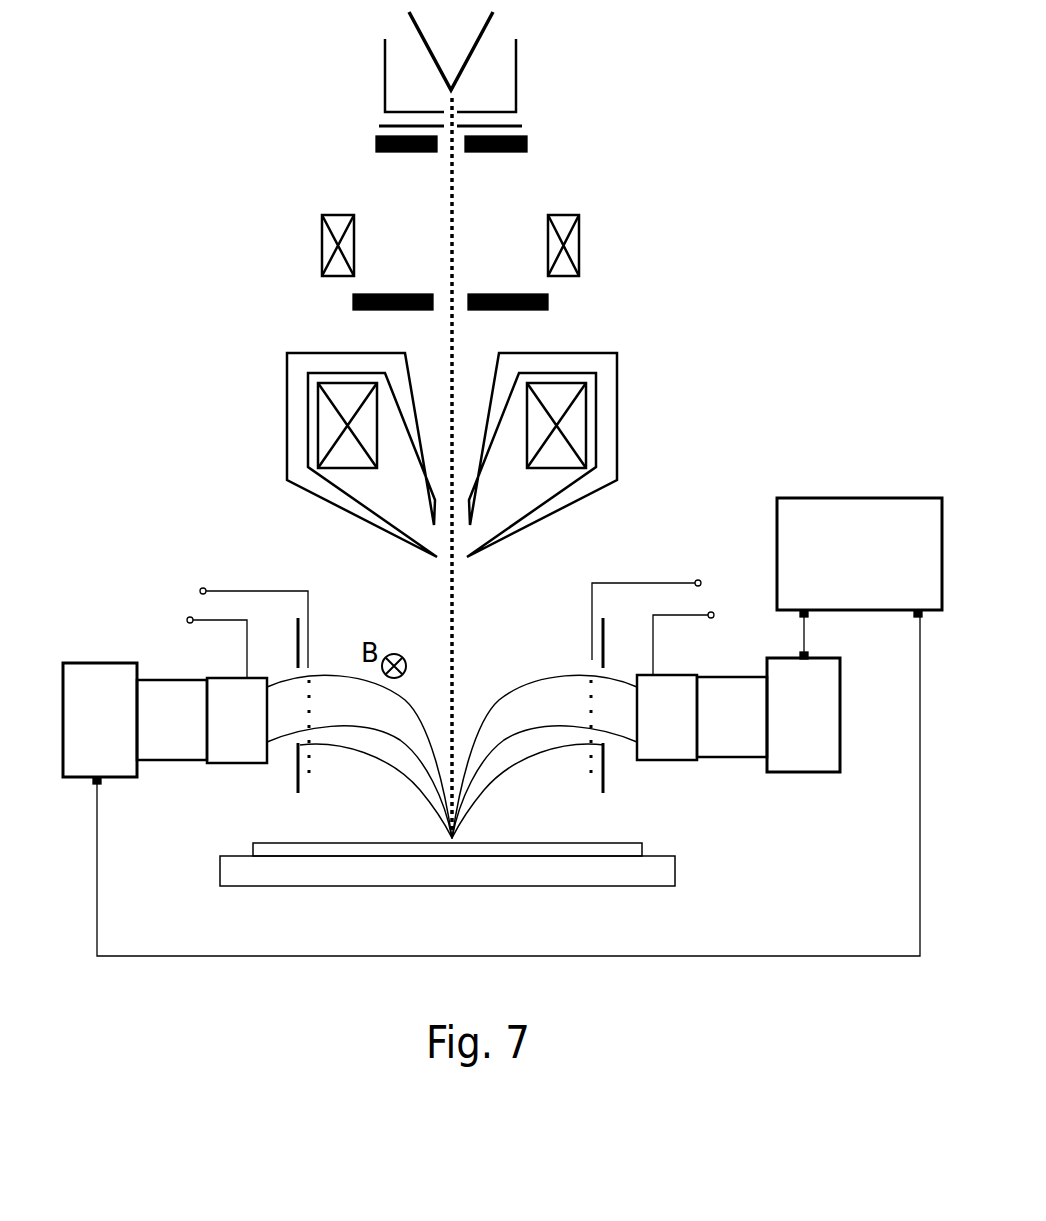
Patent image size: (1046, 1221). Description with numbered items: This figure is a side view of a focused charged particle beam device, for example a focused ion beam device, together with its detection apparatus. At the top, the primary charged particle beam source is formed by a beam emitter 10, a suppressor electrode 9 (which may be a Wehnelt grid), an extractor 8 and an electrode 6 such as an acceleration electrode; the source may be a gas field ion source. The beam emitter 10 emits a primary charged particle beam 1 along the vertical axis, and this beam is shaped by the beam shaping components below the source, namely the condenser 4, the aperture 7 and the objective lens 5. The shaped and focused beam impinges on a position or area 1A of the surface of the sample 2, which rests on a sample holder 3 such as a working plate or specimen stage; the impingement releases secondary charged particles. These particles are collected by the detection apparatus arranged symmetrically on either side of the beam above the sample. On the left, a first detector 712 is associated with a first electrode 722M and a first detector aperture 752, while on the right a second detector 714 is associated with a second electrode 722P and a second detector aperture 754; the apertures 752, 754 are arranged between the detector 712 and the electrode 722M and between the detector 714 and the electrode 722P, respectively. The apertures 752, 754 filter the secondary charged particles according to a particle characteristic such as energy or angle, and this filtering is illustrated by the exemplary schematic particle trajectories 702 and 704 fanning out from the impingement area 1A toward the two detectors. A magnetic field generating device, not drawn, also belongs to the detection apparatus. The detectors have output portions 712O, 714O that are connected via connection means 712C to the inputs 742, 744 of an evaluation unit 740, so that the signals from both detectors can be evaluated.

The beam emitter 10 is at (484, 33).
The suppressor electrode 9 is at (384, 63).
The extractor 8 is at (522, 126).
The electrode 6 is at (377, 147).
The primary charged particle beam 1 is at (453, 217).
The condenser 4 is at (580, 240).
The aperture 7 is at (380, 293).
The objective lens 5 is at (617, 447).
The first detector 712 is at (88, 648).
The output portion of first detector 712O is at (100, 781).
The connection means 712C is at (122, 956).
The particle trajectories 702 is at (340, 682).
The particle trajectories 704 is at (501, 712).
The first electrode 722M is at (313, 766).
The first detector aperture 752 is at (305, 794).
The second electrode 722P is at (590, 765).
The second detector aperture 754 is at (600, 793).
The second detector 714 is at (785, 792).
The output portion of second detector 714O is at (810, 655).
The evaluation unit 740 is at (777, 558).
The input of evaluation unit 744 is at (810, 614).
The input of evaluation unit 742 is at (917, 618).
The position or area of the sample surface 1A is at (455, 838).
The sample 2 is at (633, 849).
The sample holder 3 is at (633, 876).